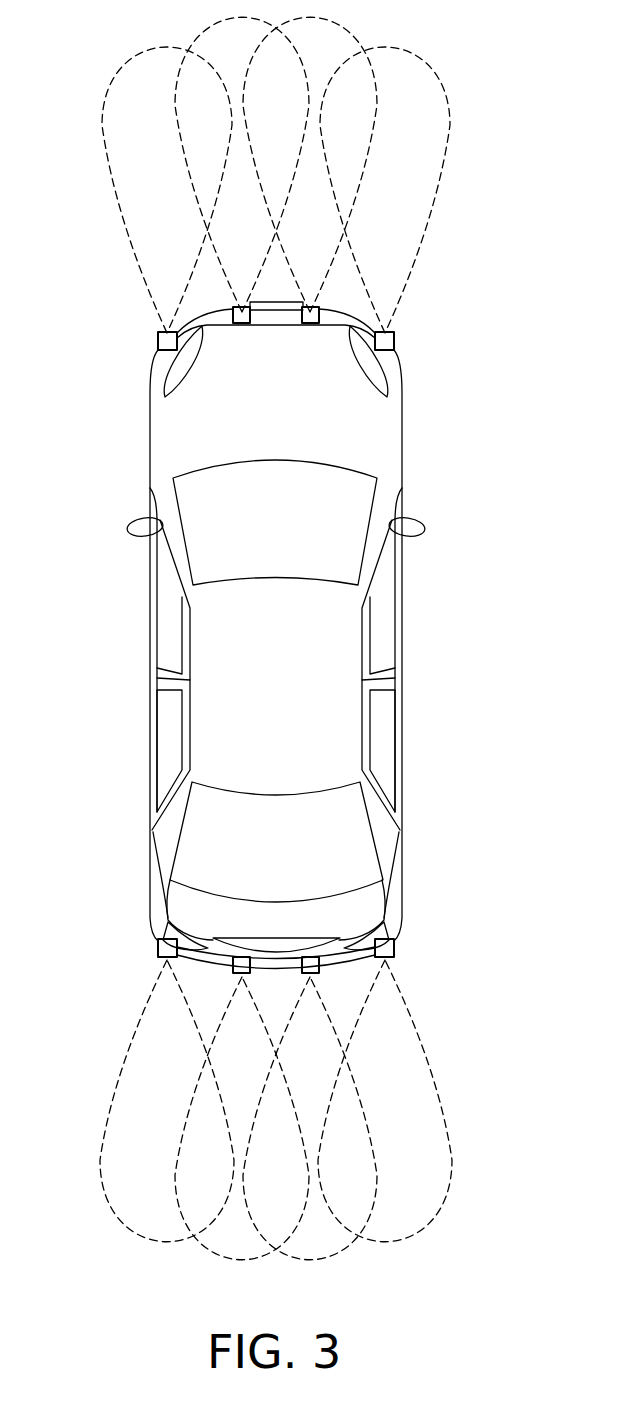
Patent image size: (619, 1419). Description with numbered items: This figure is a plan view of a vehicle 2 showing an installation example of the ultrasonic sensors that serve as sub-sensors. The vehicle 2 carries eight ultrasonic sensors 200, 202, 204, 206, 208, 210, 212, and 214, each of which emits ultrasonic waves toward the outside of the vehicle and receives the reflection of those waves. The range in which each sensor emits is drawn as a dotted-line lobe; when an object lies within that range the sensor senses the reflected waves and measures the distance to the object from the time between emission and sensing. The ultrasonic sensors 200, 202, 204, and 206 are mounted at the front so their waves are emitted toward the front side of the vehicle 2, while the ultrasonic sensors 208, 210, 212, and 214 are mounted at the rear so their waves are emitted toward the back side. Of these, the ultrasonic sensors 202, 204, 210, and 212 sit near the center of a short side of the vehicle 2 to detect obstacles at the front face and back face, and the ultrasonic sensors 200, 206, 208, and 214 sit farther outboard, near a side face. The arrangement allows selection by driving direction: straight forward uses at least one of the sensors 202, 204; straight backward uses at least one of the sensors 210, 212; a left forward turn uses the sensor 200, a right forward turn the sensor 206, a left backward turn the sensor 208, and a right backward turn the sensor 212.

The vehicle 2 is at (373, 445).
The ultrasonic sensor 200 is at (160, 342).
The ultrasonic sensor 202 is at (240, 310).
The ultrasonic sensor 204 is at (312, 310).
The ultrasonic sensor 206 is at (390, 338).
The ultrasonic sensor 208 is at (160, 948).
The ultrasonic sensor 210 is at (238, 968).
The ultrasonic sensor 212 is at (314, 968).
The ultrasonic sensor 214 is at (392, 948).